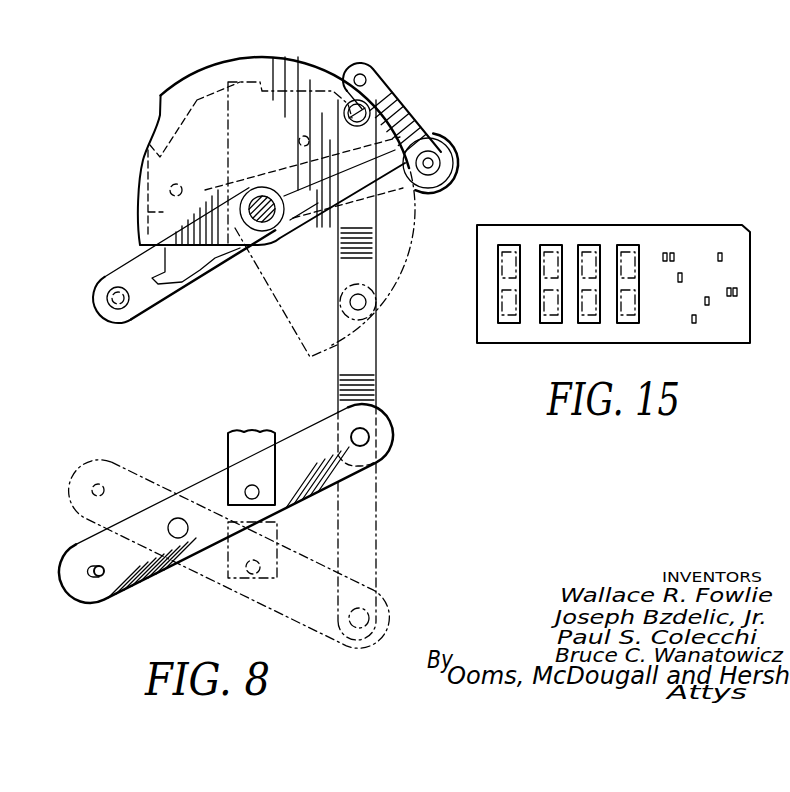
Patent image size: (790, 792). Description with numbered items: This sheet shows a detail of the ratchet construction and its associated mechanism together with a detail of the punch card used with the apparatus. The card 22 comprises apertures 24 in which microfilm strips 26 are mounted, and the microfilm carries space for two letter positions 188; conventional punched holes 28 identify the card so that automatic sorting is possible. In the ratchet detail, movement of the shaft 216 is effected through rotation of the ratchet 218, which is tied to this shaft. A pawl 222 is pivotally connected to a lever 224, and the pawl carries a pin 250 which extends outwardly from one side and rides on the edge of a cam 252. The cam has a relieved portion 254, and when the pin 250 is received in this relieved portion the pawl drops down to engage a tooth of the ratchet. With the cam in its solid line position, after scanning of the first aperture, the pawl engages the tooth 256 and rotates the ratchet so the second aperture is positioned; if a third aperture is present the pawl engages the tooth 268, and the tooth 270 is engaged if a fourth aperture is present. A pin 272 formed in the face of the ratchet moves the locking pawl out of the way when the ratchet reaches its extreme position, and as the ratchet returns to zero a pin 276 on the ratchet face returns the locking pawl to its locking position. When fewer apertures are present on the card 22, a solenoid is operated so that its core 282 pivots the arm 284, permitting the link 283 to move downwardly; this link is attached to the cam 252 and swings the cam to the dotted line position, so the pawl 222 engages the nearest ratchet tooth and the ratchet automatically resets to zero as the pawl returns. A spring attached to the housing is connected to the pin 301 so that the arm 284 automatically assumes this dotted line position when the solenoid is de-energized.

In FIG. 8, the cam 252 is at (213, 67).
In FIG. 8, the tooth 268 is at (197, 100).
In FIG. 8, the tooth 270 is at (258, 80).
In FIG. 8, the pin 250 is at (357, 75).
In FIG. 8, the pawl 222 is at (383, 92).
In FIG. 8, the relieved portion 254 is at (160, 115).
In FIG. 8, the tooth 256 is at (158, 149).
In FIG. 8, the pin 276 is at (180, 183).
In FIG. 8, the pin 272 is at (299, 139).
In FIG. 8, the shaft 216 is at (258, 195).
In FIG. 8, the ratchet 218 is at (170, 258).
In FIG. 8, the lever 224 is at (158, 302).
In FIG. 8, the link 283 is at (377, 362).
In FIG. 8, the core 282 is at (242, 438).
In FIG. 8, the arm 284 is at (195, 483).
In FIG. 8, the pin 301 is at (104, 570).
In FIG. 15, the card 22 is at (553, 225).
In FIG. 15, the letter positions 188 is at (508, 243).
In FIG. 15, the apertures 24 is at (502, 284).
In FIG. 15, the microfilm strips 26 is at (583, 246).
In FIG. 15, the punched holes 28 is at (718, 256).